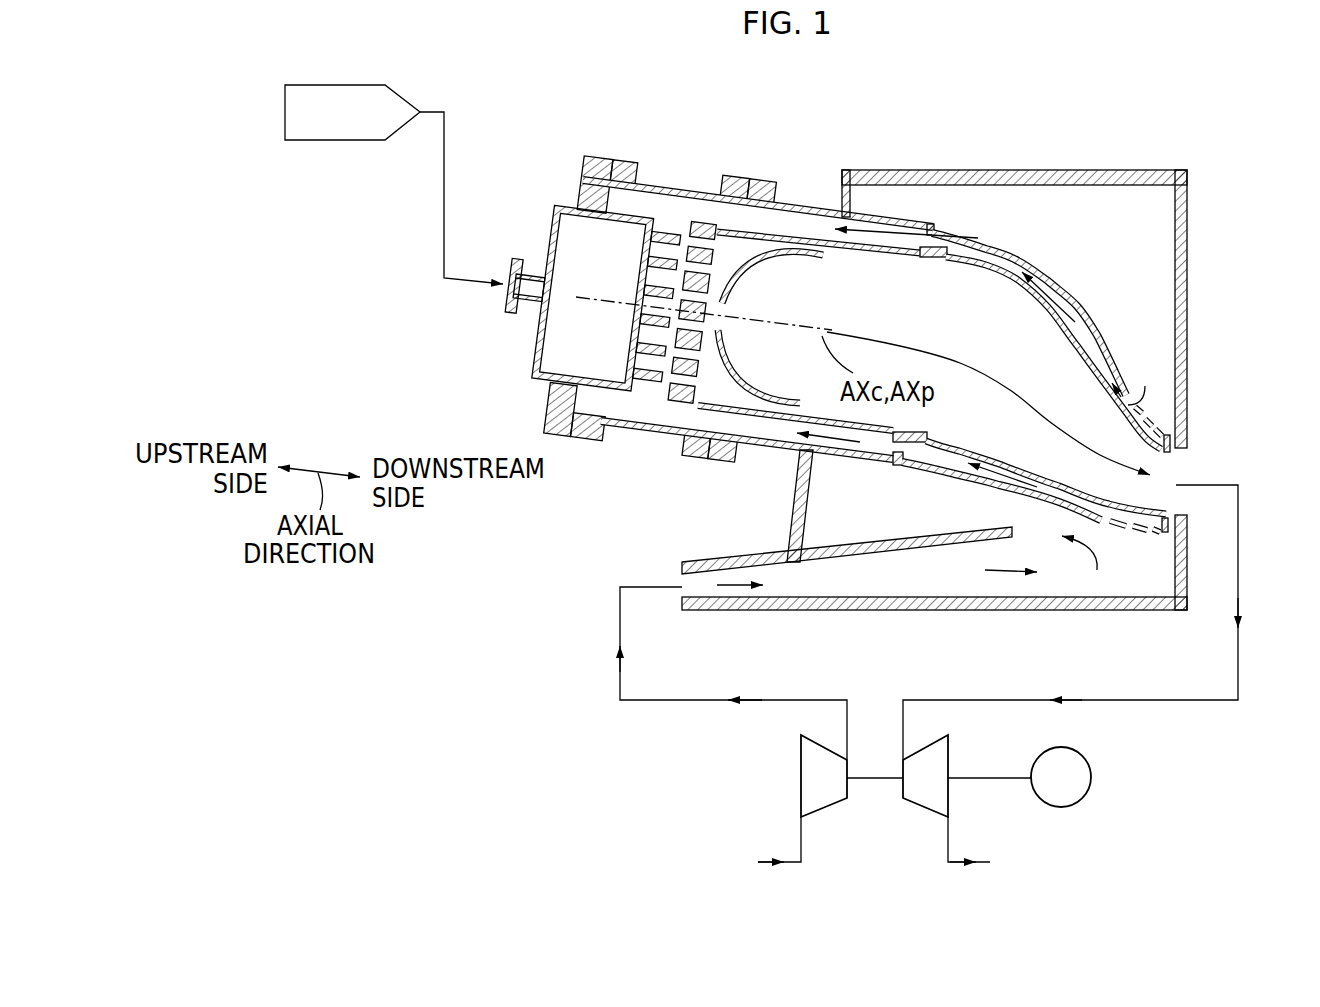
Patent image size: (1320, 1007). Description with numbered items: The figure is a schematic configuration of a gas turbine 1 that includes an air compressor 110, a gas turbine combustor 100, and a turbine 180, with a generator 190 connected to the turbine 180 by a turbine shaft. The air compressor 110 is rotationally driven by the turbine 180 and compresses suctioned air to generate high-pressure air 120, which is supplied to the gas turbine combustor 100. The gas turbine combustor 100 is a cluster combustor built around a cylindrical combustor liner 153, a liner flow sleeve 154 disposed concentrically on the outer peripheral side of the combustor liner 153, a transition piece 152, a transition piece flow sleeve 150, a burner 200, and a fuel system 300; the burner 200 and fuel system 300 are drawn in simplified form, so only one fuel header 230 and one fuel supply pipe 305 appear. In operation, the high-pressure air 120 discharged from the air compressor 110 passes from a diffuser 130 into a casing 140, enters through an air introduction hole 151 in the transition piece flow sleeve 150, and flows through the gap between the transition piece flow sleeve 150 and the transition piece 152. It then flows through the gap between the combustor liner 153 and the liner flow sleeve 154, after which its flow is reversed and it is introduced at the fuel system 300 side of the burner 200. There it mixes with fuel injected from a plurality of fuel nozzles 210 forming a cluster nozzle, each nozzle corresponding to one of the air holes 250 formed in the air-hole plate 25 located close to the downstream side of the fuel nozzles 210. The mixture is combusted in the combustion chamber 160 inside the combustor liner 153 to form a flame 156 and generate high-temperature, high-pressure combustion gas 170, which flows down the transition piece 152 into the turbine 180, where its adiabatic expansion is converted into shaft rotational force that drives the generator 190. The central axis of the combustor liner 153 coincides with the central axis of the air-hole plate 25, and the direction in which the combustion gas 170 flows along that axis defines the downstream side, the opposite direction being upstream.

The gas turbine 1 is at (511, 774).
The air-hole plate 25 is at (703, 240).
The gas turbine combustor 100 is at (612, 480).
The air compressor 110 is at (829, 802).
The high-pressure air 120 is at (731, 590).
The diffuser 130 is at (878, 562).
The casing 140 is at (1137, 570).
The transition piece flow sleeve 150 is at (1120, 360).
The air introduction hole 151 is at (1150, 413).
The transition piece 152 is at (1112, 360).
The combustor liner 153 is at (837, 210).
The liner flow sleeve 154 is at (904, 222).
The flame 156 is at (781, 236).
The combustion chamber 160 is at (857, 312).
The combustion gas 170 is at (985, 374).
The turbine 180 is at (920, 806).
The generator 190 is at (1062, 808).
The burner 200 is at (558, 186).
The fuel nozzles 210 is at (667, 237).
The fuel header 230 is at (550, 347).
The air holes 250 is at (743, 244).
The fuel system 300 is at (378, 267).
The fuel supply pipe 305 is at (442, 185).